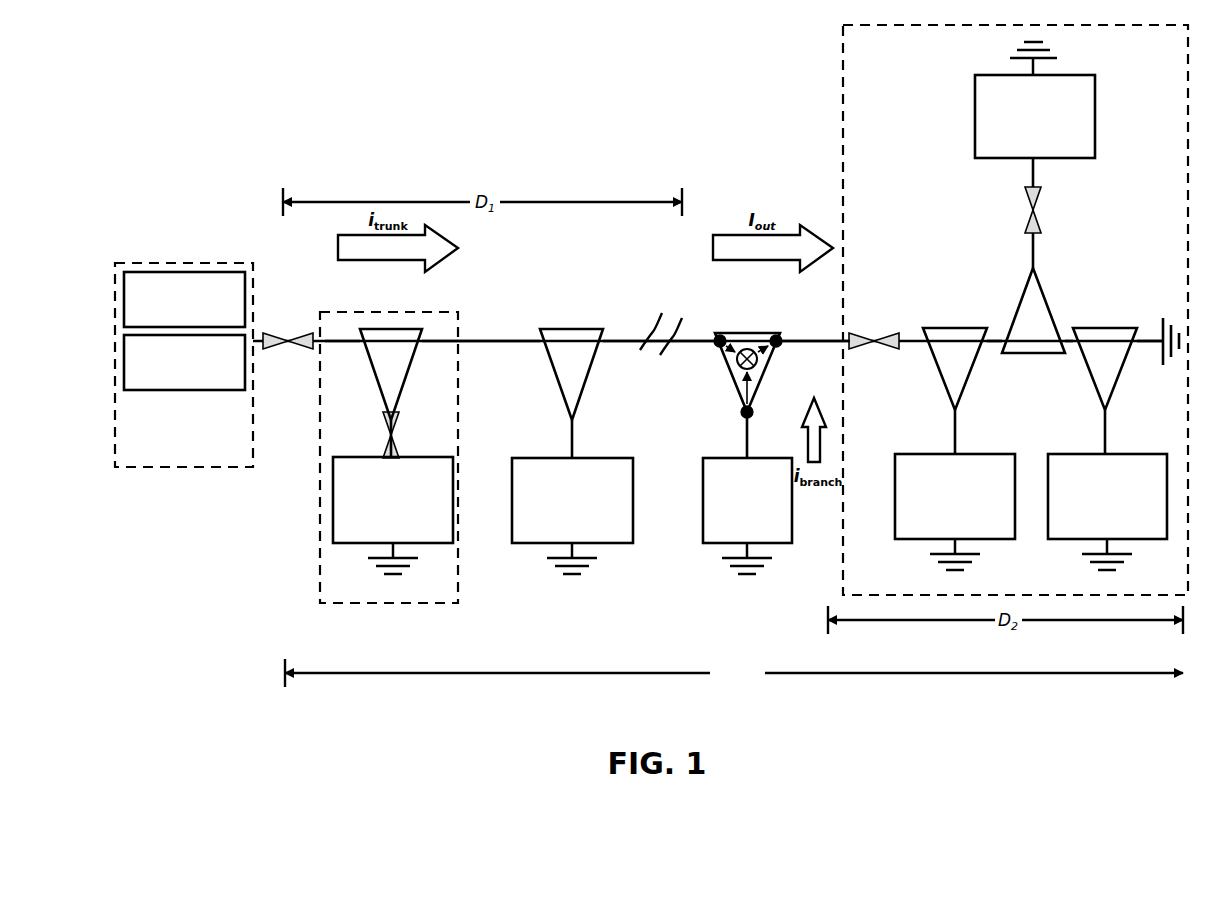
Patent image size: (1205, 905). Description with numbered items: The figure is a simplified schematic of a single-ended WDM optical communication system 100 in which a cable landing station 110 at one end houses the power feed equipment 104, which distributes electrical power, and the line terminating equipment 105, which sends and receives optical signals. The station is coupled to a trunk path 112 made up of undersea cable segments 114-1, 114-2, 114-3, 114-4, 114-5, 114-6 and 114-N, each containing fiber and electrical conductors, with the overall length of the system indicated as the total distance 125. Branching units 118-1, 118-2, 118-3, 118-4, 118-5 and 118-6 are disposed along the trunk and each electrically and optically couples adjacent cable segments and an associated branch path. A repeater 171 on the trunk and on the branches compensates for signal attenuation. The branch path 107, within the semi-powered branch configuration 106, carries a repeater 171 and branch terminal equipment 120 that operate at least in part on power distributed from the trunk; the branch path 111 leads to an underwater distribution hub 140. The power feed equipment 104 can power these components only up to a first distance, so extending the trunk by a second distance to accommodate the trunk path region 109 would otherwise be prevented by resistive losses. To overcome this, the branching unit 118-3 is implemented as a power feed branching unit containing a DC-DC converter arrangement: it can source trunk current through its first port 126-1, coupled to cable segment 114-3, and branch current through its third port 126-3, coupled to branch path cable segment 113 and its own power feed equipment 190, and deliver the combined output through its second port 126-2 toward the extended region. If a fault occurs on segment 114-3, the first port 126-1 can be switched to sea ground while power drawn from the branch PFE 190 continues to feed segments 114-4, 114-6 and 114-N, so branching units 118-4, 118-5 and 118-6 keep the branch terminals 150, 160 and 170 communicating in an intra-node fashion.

The optical communication system 100 is at (276, 165).
The power feed equipment 104 is at (184, 299).
The line terminating equipment 105 is at (184, 362).
The cable landing station 110 is at (184, 365).
The repeater 171 is at (292, 333).
The branch configuration 106 is at (344, 320).
The branch path 107 is at (382, 424).
The trunk path region 109 is at (843, 120).
The branch path 111 is at (562, 430).
The trunk path 112 is at (650, 350).
The branch path cable segment 113 is at (740, 446).
The undersea cable segment 114-1 is at (346, 337).
The undersea cable segment 114-2 is at (490, 337).
The undersea cable segment 114-3 is at (622, 337).
The undersea cable segment 114-4 is at (816, 337).
The undersea cable segment 114-5 is at (994, 337).
The undersea cable segment 114-6 is at (1068, 337).
The undersea cable segment 114-N is at (1150, 337).
The branching unit 118-1 is at (396, 327).
The branching unit 118-2 is at (568, 327).
The power feed branching unit 118-3 is at (760, 330).
The branching unit 118-4 is at (942, 373).
The branching unit 118-5 is at (1020, 300).
The branching unit 118-6 is at (1092, 373).
The branch terminal equipment 120 is at (393, 515).
The total distance 125 is at (286, 678).
The first port 126-1 is at (718, 351).
The second port 126-2 is at (780, 352).
The third port 126-3 is at (758, 418).
The underwater distribution hub 140 is at (572, 516).
The branch terminal 150 is at (955, 490).
The branch terminal 160 is at (1035, 155).
The branch terminal 170 is at (1107, 490).
The power feed equipment 190 is at (747, 516).